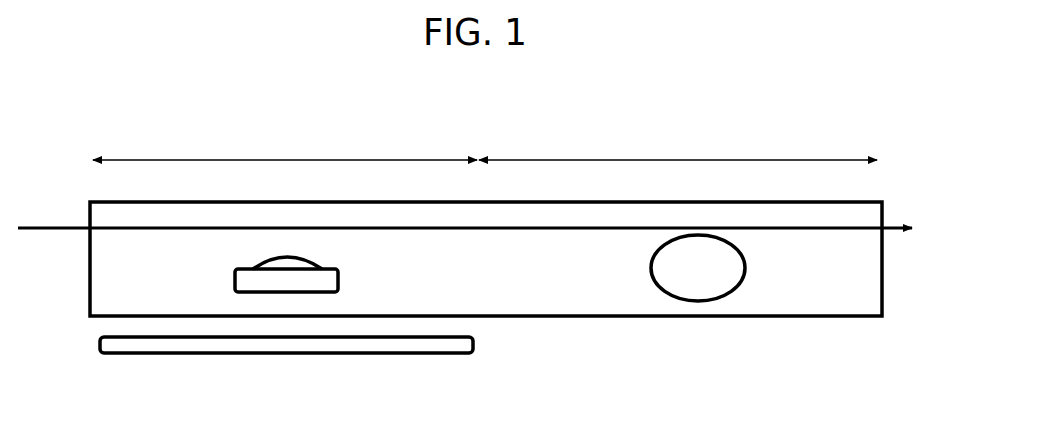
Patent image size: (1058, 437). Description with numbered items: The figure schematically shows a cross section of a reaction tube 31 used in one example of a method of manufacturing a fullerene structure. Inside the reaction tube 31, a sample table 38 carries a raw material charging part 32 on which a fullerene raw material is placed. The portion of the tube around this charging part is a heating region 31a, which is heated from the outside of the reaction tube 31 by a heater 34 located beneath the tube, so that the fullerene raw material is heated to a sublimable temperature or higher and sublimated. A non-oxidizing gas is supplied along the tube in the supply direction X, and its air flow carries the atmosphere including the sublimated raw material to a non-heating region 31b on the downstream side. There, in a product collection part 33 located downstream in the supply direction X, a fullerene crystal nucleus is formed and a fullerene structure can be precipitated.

The reaction tube 31 is at (838, 318).
The heating region 31a is at (285, 143).
The non-heating region 31b is at (678, 143).
The raw material charging part 32 is at (283, 270).
The product collection part 33 is at (698, 280).
The heater 34 is at (438, 354).
The sample table 38 is at (312, 289).
The supply direction of the non-oxidizing gas X is at (465, 212).